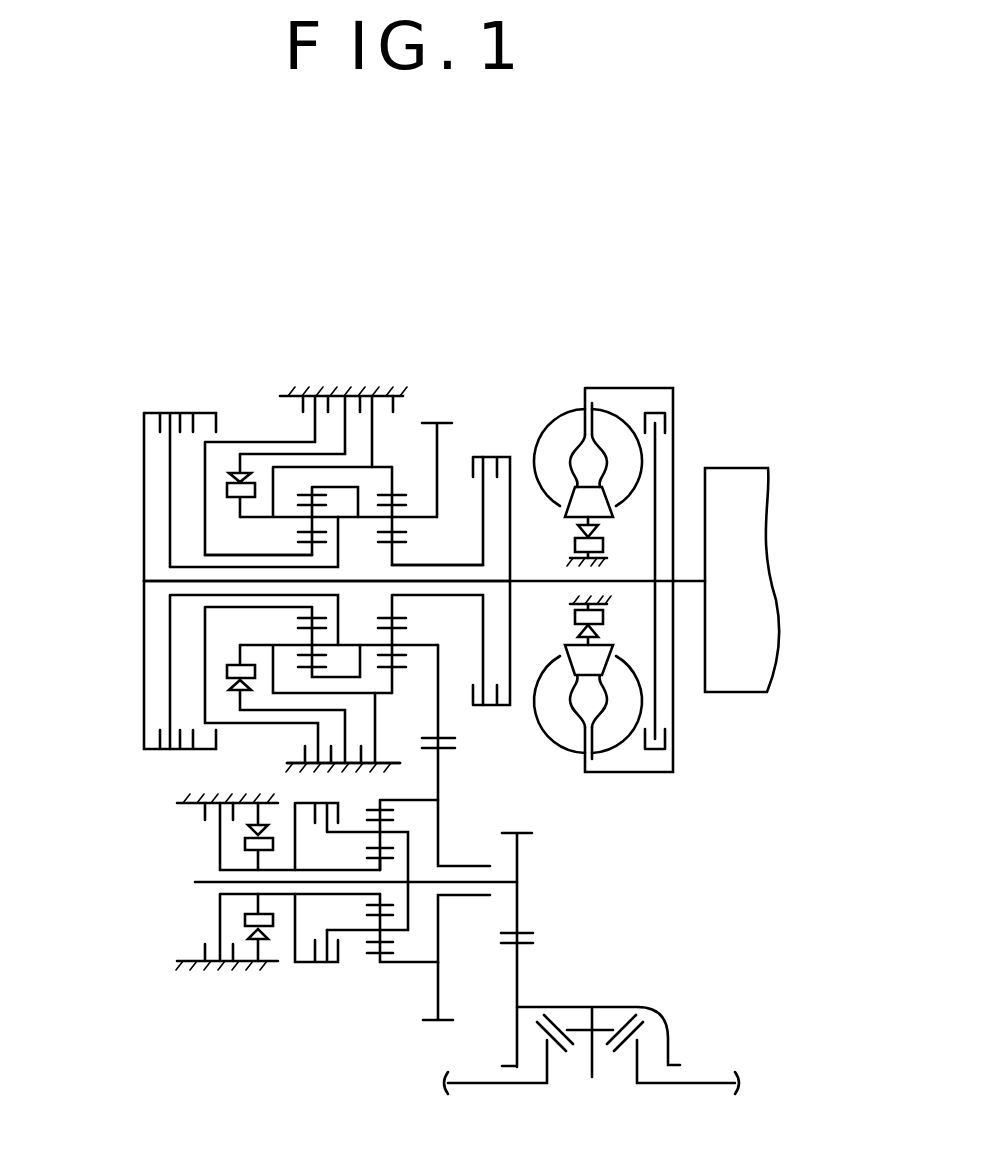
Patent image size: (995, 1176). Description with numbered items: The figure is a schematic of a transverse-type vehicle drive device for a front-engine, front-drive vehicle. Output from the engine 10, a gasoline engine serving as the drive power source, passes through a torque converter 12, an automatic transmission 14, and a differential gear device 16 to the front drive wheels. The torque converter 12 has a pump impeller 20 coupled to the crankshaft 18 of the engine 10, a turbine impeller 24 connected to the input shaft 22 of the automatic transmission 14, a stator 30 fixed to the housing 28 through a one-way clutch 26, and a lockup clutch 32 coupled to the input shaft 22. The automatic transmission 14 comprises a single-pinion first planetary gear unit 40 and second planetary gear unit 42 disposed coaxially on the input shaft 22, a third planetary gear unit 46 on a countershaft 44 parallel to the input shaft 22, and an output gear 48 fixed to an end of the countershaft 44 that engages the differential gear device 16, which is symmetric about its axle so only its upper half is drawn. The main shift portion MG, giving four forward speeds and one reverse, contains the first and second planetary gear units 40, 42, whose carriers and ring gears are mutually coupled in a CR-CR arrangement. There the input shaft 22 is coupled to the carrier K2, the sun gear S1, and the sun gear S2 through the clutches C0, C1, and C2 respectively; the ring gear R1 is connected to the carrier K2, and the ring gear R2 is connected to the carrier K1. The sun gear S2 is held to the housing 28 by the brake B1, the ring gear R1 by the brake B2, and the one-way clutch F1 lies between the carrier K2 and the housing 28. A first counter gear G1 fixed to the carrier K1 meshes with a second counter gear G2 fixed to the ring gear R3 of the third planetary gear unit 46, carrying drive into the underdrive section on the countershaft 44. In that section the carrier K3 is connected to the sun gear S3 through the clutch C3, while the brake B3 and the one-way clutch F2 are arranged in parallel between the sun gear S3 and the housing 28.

The engine 10 is at (740, 487).
The torque converter 12 is at (666, 347).
The automatic transmission 14 is at (473, 288).
The differential gear device 16 is at (608, 963).
The crankshaft 18 is at (690, 588).
The pump impeller 20 is at (570, 423).
The input shaft 22 is at (535, 580).
The turbine impeller 24 is at (610, 740).
The one-way clutch 26 is at (570, 677).
The housing 28 is at (345, 394).
The stator 30 is at (573, 482).
The lockup clutch 32 is at (667, 425).
The first planetary gear unit 40 is at (415, 394).
The second planetary gear unit 42 is at (297, 464).
The countershaft 44 is at (207, 880).
The third planetary gear unit 46 is at (373, 974).
The output gear 48 is at (520, 933).
The clutch C0 is at (157, 411).
The clutch C1 is at (490, 455).
The clutch C2 is at (208, 411).
The clutch C3 is at (332, 963).
The brake B1 is at (283, 396).
The brake B2 is at (405, 396).
The brake B3 is at (207, 942).
The carrier K1 is at (413, 523).
The carrier K2 is at (298, 531).
The carrier K3 is at (398, 832).
The ring gear R1 is at (393, 492).
The ring gear R2 is at (205, 444).
The ring gear R3 is at (377, 803).
The sun gear S1 is at (395, 543).
The sun gear S2 is at (312, 543).
The sun gear S3 is at (372, 857).
The one-way clutch F1 is at (227, 490).
The one-way clutch F2 is at (278, 940).
The first counter gear G1 is at (458, 742).
The second counter gear G2 is at (447, 1020).
The main shift portion MG is at (123, 708).